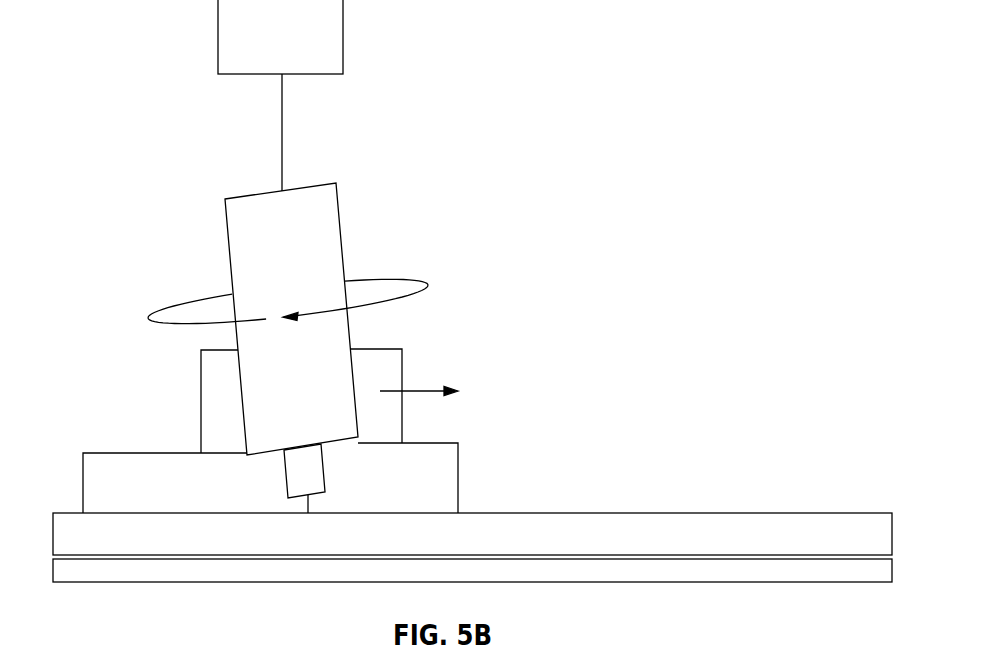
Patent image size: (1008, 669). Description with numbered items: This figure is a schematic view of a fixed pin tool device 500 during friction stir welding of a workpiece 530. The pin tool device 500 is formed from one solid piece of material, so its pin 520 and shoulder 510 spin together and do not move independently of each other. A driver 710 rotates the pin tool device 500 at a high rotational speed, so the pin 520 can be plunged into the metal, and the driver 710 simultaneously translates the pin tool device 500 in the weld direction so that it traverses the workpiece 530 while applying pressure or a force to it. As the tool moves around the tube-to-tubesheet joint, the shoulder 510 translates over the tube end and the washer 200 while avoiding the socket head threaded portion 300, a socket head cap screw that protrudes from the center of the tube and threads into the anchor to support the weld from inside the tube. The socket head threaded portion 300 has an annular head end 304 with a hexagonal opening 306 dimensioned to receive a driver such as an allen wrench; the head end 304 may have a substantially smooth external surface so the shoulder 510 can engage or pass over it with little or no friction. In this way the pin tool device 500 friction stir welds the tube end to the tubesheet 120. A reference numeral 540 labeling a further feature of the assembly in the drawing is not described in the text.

The driver 710 is at (218, 24).
The pin tool device 500 is at (245, 175).
The shoulder 510 is at (316, 183).
The pin 520 is at (298, 488).
The workpiece 530 is at (173, 490).
The workpiece 540 is at (75, 528).
The tubesheet 120 is at (738, 513).
The washer 200 is at (192, 462).
The socket head threaded portion 300 is at (403, 357).
The annular head end 304 is at (200, 383).
The hexagonal opening 306 is at (389, 356).